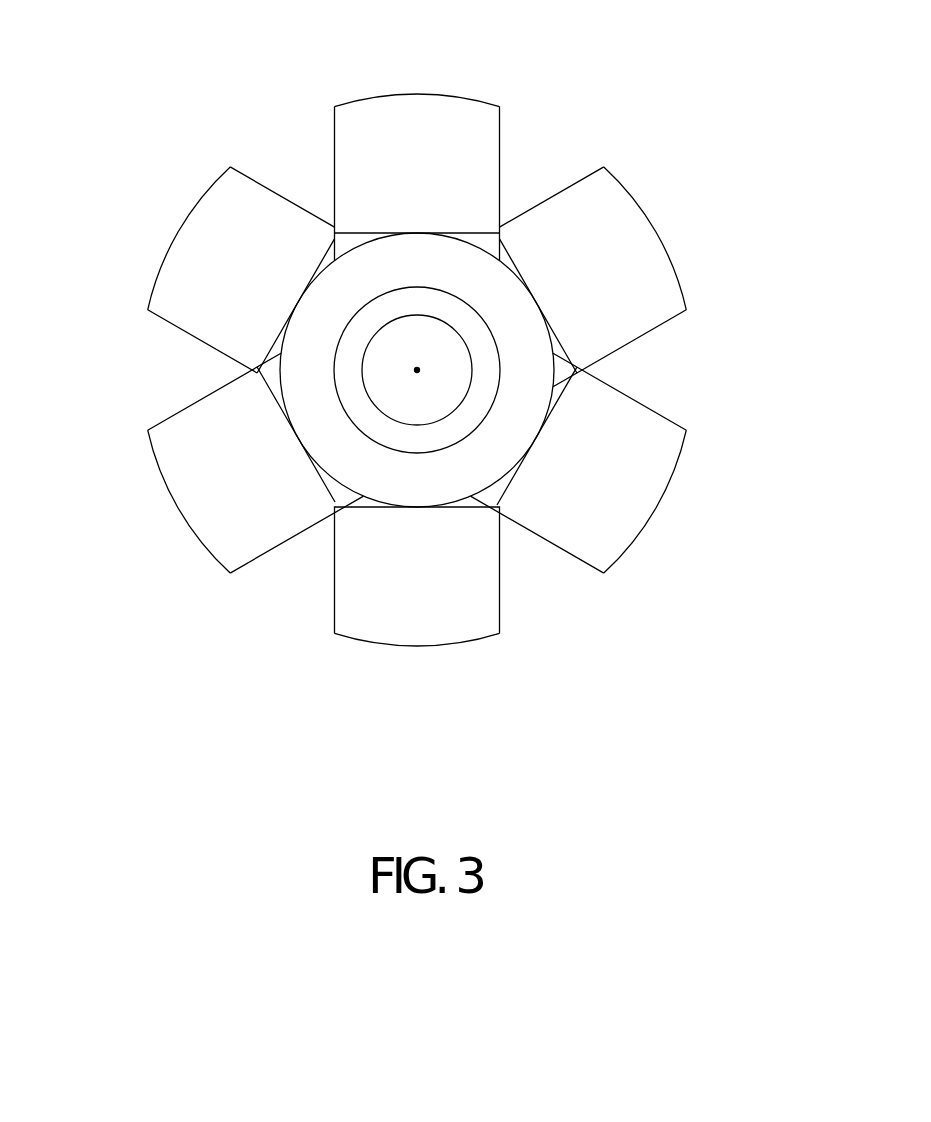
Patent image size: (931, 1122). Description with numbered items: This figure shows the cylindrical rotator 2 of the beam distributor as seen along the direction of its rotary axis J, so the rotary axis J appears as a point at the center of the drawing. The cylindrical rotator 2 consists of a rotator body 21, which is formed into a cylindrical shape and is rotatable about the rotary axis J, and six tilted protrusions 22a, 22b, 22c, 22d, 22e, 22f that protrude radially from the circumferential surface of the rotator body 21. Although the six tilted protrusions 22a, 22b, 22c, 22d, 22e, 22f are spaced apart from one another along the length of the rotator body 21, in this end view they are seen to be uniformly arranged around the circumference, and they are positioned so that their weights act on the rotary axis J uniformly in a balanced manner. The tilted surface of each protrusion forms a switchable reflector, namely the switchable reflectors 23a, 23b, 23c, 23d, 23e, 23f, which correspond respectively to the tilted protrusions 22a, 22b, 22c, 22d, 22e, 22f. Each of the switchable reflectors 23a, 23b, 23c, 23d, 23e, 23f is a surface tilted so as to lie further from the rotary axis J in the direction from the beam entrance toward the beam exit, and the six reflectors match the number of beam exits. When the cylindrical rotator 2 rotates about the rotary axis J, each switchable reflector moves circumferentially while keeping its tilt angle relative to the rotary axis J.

The cylindrical rotator 2 is at (588, 84).
The rotator body 21 is at (553, 390).
The rotary axis J is at (417, 372).
The tilted protrusion 22a is at (396, 141).
The tilted protrusion 22b is at (651, 463).
The tilted protrusion 22c is at (228, 502).
The tilted protrusion 22d is at (646, 255).
The tilted protrusion 22e is at (189, 270).
The tilted protrusion 22f is at (455, 624).
The switchable reflector 23a is at (417, 120).
The switchable reflector 23b is at (635, 495).
The switchable reflector 23c is at (200, 493).
The switchable reflector 23d is at (640, 243).
The switchable reflector 23e is at (193, 240).
The switchable reflector 23f is at (417, 620).